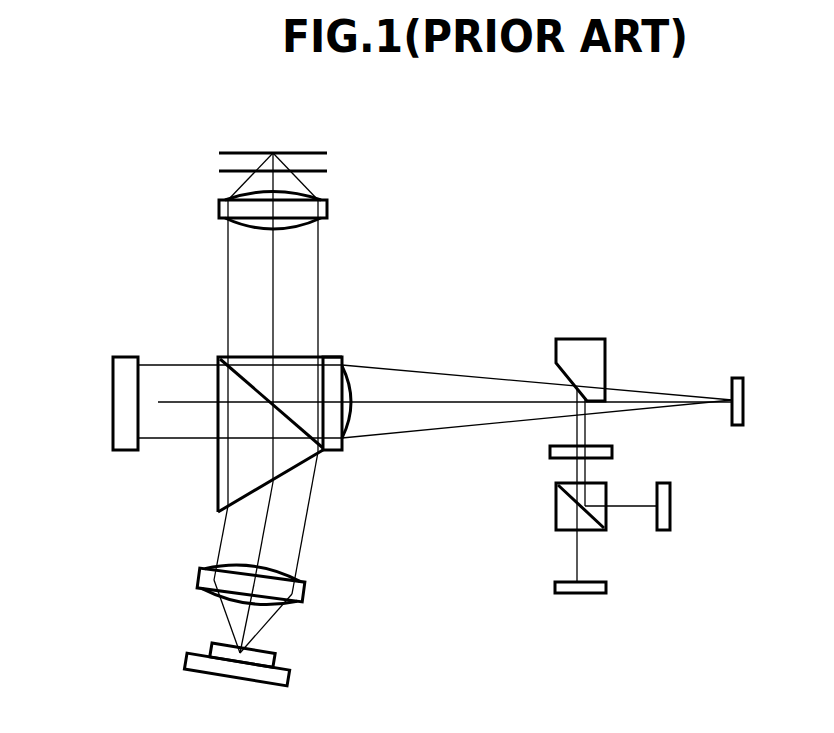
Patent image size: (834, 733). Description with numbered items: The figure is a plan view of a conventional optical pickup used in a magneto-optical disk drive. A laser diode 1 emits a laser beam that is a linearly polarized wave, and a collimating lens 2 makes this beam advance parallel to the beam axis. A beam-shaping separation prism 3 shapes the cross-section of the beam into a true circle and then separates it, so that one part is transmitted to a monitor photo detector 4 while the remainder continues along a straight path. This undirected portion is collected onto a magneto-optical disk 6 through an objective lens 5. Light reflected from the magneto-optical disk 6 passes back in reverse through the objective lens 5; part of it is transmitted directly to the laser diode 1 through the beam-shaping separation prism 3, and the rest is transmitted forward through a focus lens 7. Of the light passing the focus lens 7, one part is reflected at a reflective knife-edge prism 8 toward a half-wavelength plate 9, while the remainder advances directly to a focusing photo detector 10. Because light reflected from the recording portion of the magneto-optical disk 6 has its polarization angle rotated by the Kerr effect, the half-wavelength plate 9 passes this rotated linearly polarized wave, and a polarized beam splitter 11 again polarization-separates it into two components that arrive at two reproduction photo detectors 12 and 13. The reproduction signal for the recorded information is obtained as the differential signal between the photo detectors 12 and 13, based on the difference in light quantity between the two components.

The laser diode 1 is at (282, 686).
The collimating lens 2 is at (306, 594).
The beam-shaping separation prism 3 is at (220, 472).
The monitor photo detector 4 is at (118, 389).
The objective lens 5 is at (328, 210).
The magneto-optical disk 6 is at (330, 168).
The focus lens 7 is at (330, 452).
The reflective knife-edge prism 8 is at (598, 362).
The half-wavelength plate 9 is at (550, 452).
The focusing photo detector 10 is at (743, 390).
The polarized beam splitter 11 is at (562, 517).
The reproduction photo detector 12 is at (670, 520).
The reproduction photo detector 13 is at (555, 590).